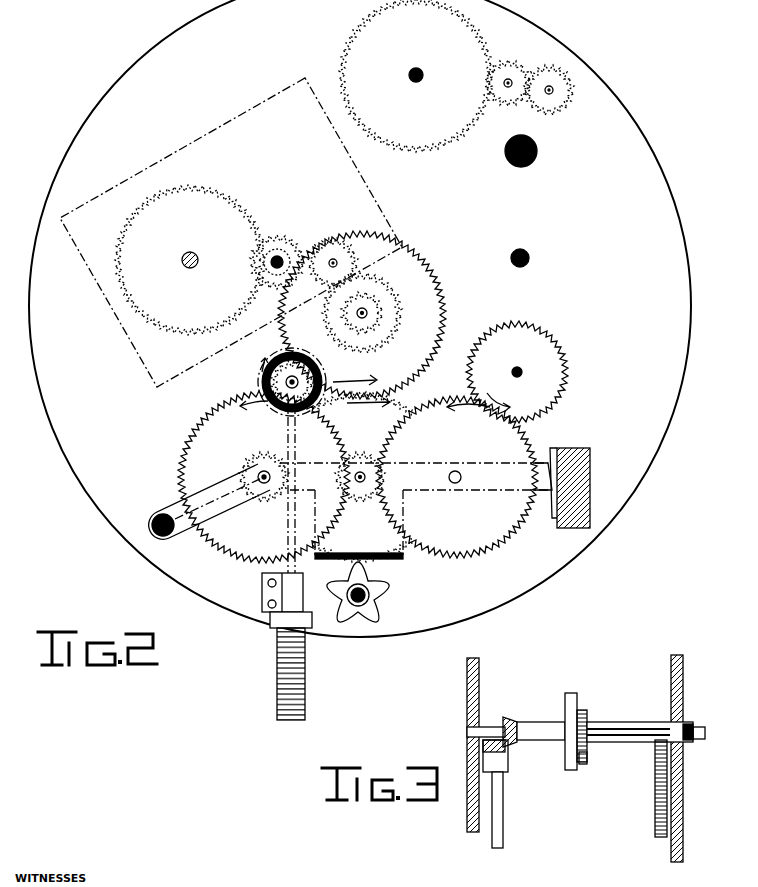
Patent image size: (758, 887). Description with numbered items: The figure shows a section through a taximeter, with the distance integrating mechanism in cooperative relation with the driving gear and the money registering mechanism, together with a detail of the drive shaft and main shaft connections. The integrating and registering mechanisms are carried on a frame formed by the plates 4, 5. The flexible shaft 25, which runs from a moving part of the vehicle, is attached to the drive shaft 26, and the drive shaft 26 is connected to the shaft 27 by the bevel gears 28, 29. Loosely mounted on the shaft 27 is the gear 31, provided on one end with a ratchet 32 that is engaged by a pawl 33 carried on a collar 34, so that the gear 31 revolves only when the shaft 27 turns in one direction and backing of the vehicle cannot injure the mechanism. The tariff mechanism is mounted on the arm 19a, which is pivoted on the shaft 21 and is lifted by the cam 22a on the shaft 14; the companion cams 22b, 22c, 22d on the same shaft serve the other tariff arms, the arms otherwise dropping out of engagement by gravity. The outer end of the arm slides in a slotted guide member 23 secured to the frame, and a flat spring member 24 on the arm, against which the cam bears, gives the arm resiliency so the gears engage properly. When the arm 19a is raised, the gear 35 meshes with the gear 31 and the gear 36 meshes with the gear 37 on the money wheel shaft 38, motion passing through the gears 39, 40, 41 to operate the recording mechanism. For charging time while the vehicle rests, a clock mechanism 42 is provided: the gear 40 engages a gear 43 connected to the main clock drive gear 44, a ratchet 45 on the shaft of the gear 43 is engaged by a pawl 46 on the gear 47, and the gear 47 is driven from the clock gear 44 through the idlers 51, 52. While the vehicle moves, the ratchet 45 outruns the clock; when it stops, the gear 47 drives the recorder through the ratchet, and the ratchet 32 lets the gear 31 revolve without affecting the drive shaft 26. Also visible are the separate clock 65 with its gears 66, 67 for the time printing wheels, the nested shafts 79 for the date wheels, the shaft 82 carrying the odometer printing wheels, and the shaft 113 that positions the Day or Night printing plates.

In FIG. 3, the frame plate 4 is at (683, 788).
In FIG. 2, the frame plate 5 is at (360, 318).
In FIG. 3, the frame plate 5 is at (467, 684).
In FIG. 2, the shaft 14 is at (372, 593).
In FIG. 2, the arm 19a is at (183, 485).
In FIG. 2, the shaft 21 is at (156, 522).
In FIG. 3, the shaft 21 is at (680, 718).
In FIG. 2, the cam 22a is at (275, 568).
In FIG. 2, the cam 22b is at (333, 590).
In FIG. 2, the cam 22c is at (350, 624).
In FIG. 2, the cam 22d is at (383, 615).
In FIG. 2, the slotted guide member 23 is at (594, 469).
In FIG. 2, the flat spring member 24 is at (285, 570).
In FIG. 2, the flexible shaft 25 is at (277, 666).
In FIG. 2, the drive shaft 26 is at (269, 486).
In FIG. 3, the drive shaft 26 is at (505, 800).
In FIG. 3, the shaft 27 is at (535, 728).
In FIG. 3, the bevel gear 28 is at (468, 741).
In FIG. 3, the bevel gear 29 is at (505, 717).
In FIG. 2, the gear 31 is at (262, 387).
In FIG. 3, the gear 31 is at (620, 727).
In FIG. 3, the ratchet 32 is at (583, 710).
In FIG. 3, the pawl 33 is at (587, 756).
In FIG. 3, the collar 34 is at (565, 750).
In FIG. 2, the gear 35 is at (264, 477).
In FIG. 3, the gear 35 is at (655, 775).
In FIG. 2, the gear 36 is at (457, 477).
In FIG. 2, the gear 37 is at (517, 372).
In FIG. 2, the money wheel shaft 38 is at (544, 406).
In FIG. 2, the gear 39 is at (264, 491).
In FIG. 2, the gear 40 is at (362, 477).
In FIG. 2, the gear 41 is at (360, 467).
In FIG. 2, the clock mechanism 42 is at (265, 102).
In FIG. 2, the gear 43 is at (420, 362).
In FIG. 2, the main clock drive gear 44 is at (190, 189).
In FIG. 2, the ratchet 45 is at (410, 267).
In FIG. 2, the pawl 46 is at (342, 316).
In FIG. 2, the gear 47 is at (400, 306).
In FIG. 2, the idler 51 is at (347, 242).
In FIG. 2, the idler 52 is at (302, 242).
In FIG. 2, the clock 65 is at (440, 34).
In FIG. 2, the gear 66 is at (518, 50).
In FIG. 2, the gear 67 is at (562, 106).
In FIG. 2, the shaft 79 is at (538, 151).
In FIG. 2, the shaft 82 is at (530, 258).
In FIG. 2, the shaft 113 is at (488, 204).